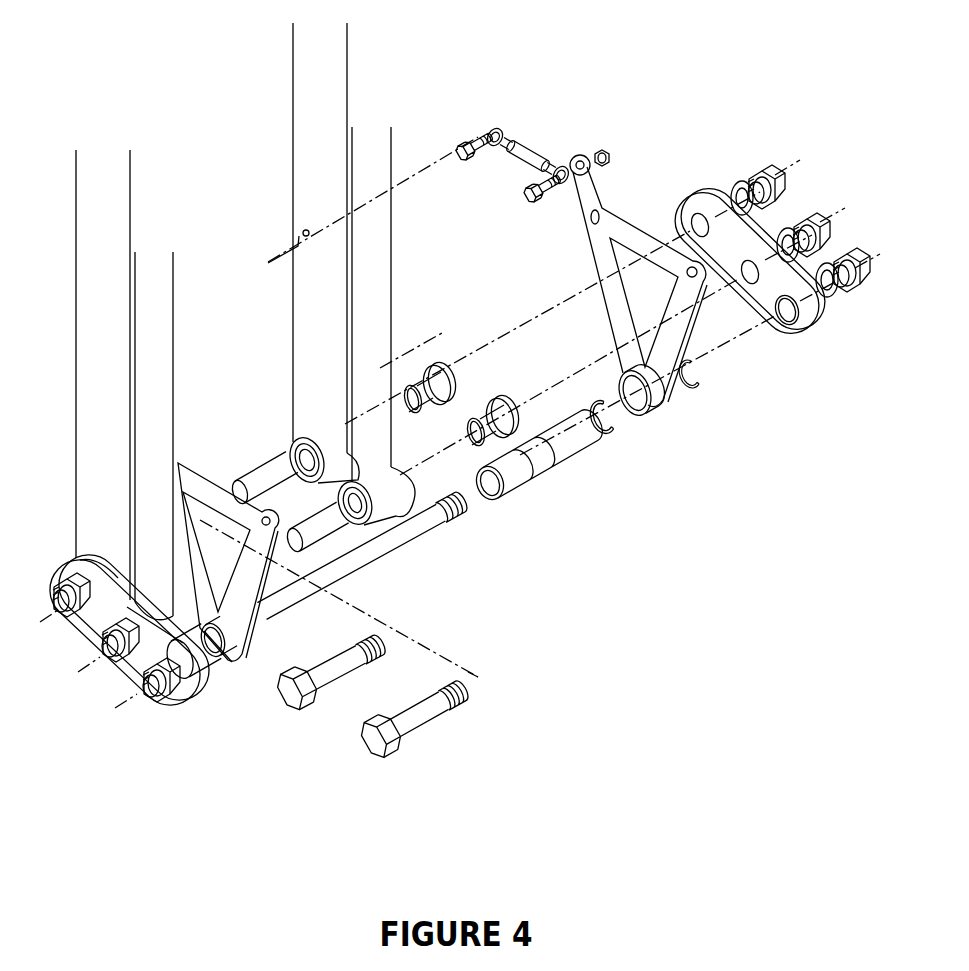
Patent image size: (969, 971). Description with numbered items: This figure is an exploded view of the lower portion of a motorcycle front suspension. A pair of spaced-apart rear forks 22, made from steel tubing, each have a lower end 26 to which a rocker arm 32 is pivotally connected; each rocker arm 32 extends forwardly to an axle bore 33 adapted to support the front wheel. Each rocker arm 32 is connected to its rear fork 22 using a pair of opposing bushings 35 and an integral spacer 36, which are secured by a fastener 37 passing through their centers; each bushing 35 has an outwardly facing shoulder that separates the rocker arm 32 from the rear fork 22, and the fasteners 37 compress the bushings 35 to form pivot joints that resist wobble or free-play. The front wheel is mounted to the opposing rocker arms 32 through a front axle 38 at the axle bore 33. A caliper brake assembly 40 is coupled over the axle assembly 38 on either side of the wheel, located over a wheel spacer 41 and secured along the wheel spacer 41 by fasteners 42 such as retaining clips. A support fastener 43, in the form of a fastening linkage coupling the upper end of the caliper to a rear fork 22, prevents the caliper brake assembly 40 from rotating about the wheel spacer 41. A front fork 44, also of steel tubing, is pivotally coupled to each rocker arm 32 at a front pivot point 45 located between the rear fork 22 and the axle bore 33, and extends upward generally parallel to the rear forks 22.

The rear fork 22 is at (291, 169).
The lower end 26 is at (74, 545).
The rocker arm 32 is at (823, 326).
The axle bore 33 is at (782, 318).
The bushing 35 is at (289, 449).
The integral spacer 36 is at (250, 471).
The fastener 37 is at (48, 598).
The front axle 38 is at (363, 579).
The caliper brake assembly 40 is at (586, 235).
The wheel spacer 41 is at (207, 676).
The fastener 42 is at (709, 396).
The support fastener 43 is at (542, 149).
The front fork 44 is at (176, 359).
The front pivot point 45 is at (371, 521).